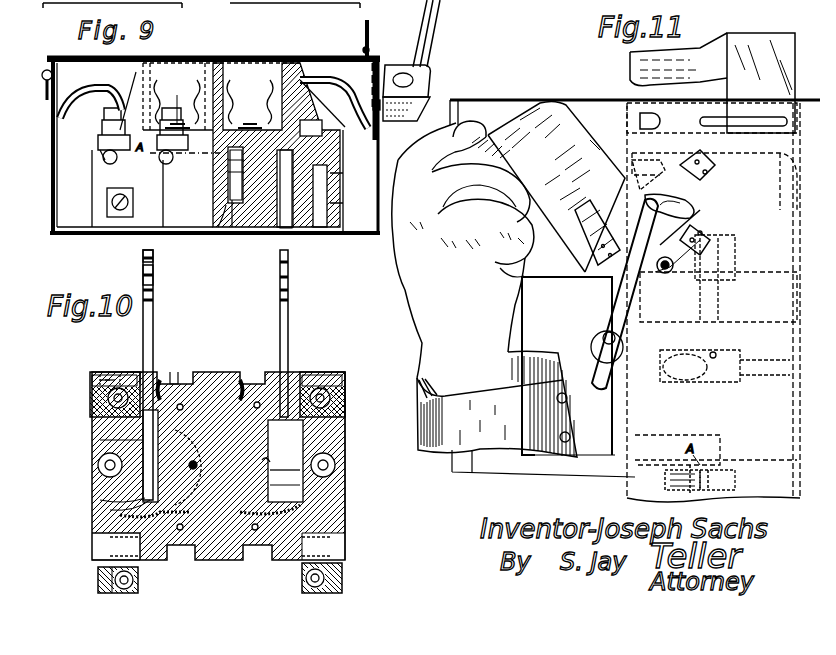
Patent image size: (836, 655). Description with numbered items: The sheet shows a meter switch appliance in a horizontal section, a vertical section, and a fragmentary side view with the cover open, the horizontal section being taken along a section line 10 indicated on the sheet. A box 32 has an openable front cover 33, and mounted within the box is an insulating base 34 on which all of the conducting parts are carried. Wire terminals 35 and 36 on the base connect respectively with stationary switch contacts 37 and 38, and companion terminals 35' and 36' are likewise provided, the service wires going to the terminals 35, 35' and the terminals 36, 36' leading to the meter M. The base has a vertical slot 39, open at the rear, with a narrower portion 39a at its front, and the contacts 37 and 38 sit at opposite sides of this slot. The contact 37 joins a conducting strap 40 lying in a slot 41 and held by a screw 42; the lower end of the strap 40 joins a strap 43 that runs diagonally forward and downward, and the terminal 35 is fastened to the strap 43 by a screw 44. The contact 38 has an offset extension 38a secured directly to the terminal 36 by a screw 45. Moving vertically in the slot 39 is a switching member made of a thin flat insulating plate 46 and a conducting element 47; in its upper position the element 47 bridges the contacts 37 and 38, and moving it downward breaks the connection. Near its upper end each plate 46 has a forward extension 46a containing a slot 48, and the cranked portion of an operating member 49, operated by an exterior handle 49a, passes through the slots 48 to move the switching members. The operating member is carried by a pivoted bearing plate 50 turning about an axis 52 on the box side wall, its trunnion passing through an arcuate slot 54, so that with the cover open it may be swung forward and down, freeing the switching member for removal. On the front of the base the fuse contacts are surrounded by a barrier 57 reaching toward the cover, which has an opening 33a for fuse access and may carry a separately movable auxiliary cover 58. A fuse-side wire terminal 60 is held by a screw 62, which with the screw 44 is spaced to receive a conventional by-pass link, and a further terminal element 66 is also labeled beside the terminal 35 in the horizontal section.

In FIG. 9, the handle 10 is at (77, 144).
In FIG. 9, the box 32 is at (54, 190).
In FIG. 11, the box 32 is at (761, 66).
In FIG. 9, the openable front cover 33 is at (70, 50).
In FIG. 11, the openable front cover 33 is at (500, 100).
In FIG. 9, the opening 33a is at (282, 57).
In FIG. 11, the opening 33a is at (560, 277).
In FIG. 9, the insulating base 34 is at (332, 176).
In FIG. 10, the insulating base 34 is at (345, 449).
In FIG. 9, the wire terminal 35 is at (114, 147).
In FIG. 10, the wire terminal 35 is at (99, 580).
In FIG. 10, the wire terminal 35' is at (337, 578).
In FIG. 11, the wire terminal 35' is at (734, 480).
In FIG. 10, the wire terminal 36 is at (99, 394).
In FIG. 10, the wire terminal 36' is at (339, 394).
In FIG. 10, the stationary switch contact 37 is at (173, 378).
In FIG. 10, the stationary switch contact 38 is at (140, 380).
In FIG. 10, the offset extension 38a is at (110, 378).
In FIG. 10, the vertical slot 39 is at (120, 498).
In FIG. 10, the narrower portion 39a is at (110, 440).
In FIG. 9, the conducting strap 40 is at (236, 233).
In FIG. 10, the conducting strap 40 is at (279, 492).
In FIG. 9, the slot 41 is at (240, 233).
In FIG. 10, the slot 41 is at (285, 473).
In FIG. 9, the screw 42 is at (222, 233).
In FIG. 10, the screw 42 is at (270, 462).
In FIG. 9, the strap 43 is at (133, 204).
In FIG. 10, the strap 43 is at (100, 547).
In FIG. 9, the screw 44 is at (112, 100).
In FIG. 10, the screw 44 is at (140, 580).
In FIG. 10, the screw 45 is at (105, 392).
In FIG. 10, the thin flat plate of insulating material 46 is at (153, 322).
In FIG. 11, the thin flat plate of insulating material 46 is at (605, 148).
In FIG. 10, the forward extension 46a is at (143, 262).
In FIG. 11, the forward extension 46a is at (676, 160).
In FIG. 9, the conducting element 47 is at (290, 233).
In FIG. 10, the conducting element 47 is at (160, 375).
In FIG. 11, the conducting element 47 is at (580, 245).
In FIG. 10, the slot 48 is at (153, 275).
In FIG. 11, the slot 48 is at (648, 163).
In FIG. 9, the cranked operating member 49 is at (334, 95).
In FIG. 11, the cranked operating member 49 is at (651, 294).
In FIG. 11, the handle 49a is at (608, 394).
In FIG. 11, the pivoted bearing plate 50 is at (645, 195).
In FIG. 11, the pivotal axis 52 is at (662, 273).
In FIG. 11, the arcuate slot 54 is at (700, 205).
In FIG. 9, the barrier 57 is at (140, 72).
In FIG. 9, the auxiliary cover 58 is at (312, 57).
In FIG. 11, the wire terminal 60 is at (685, 478).
In FIG. 9, the screw 62 is at (172, 101).
In FIG. 9, the terminal 66 is at (180, 145).
In FIG. 11, the meter M is at (640, 68).